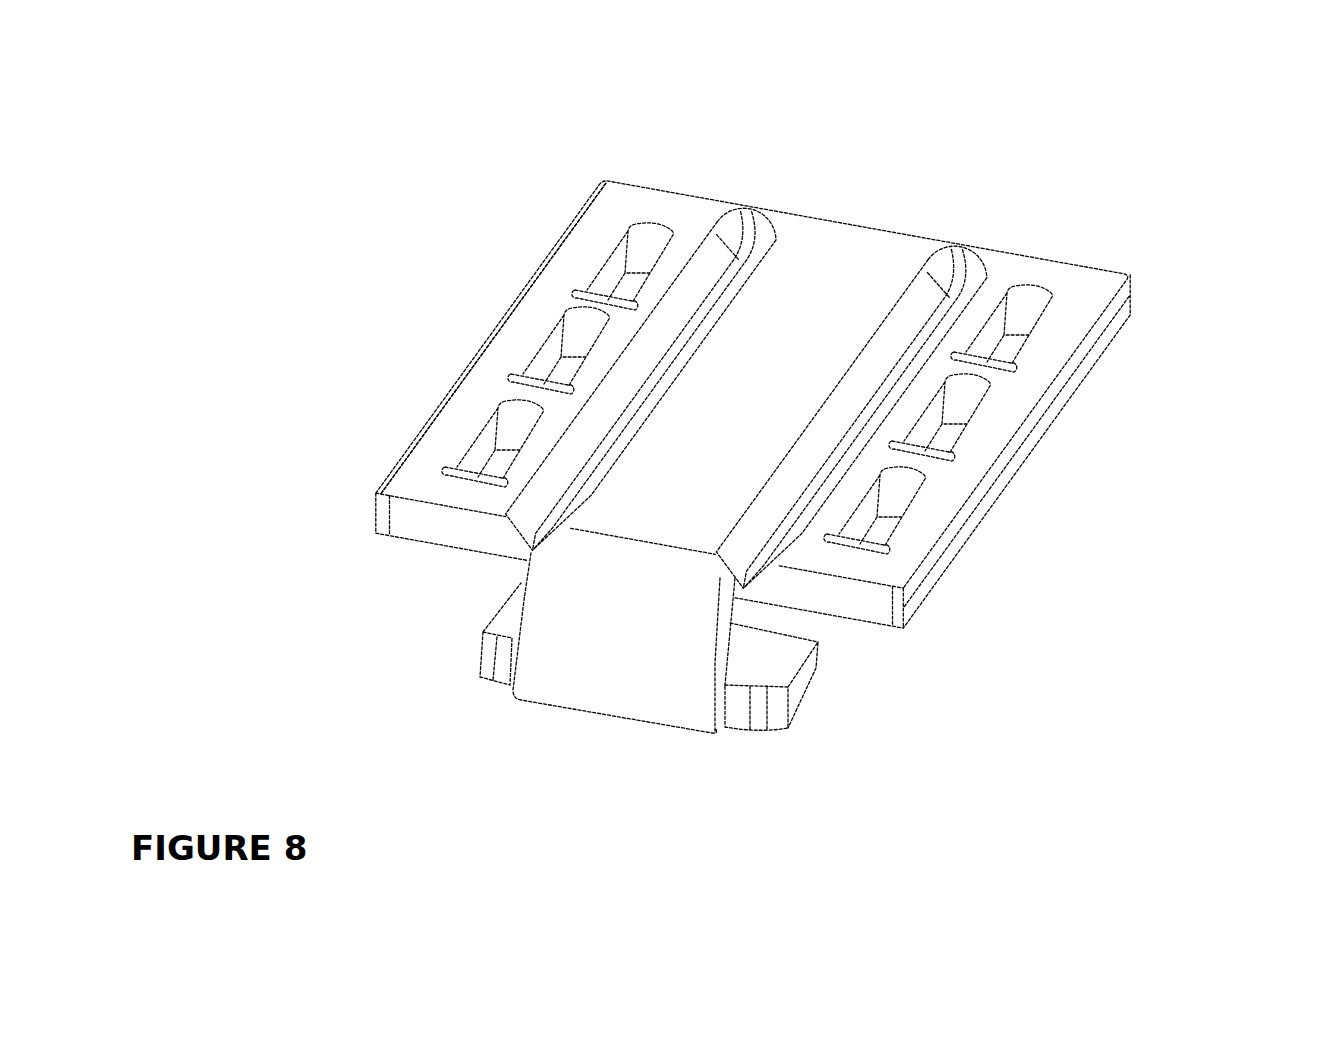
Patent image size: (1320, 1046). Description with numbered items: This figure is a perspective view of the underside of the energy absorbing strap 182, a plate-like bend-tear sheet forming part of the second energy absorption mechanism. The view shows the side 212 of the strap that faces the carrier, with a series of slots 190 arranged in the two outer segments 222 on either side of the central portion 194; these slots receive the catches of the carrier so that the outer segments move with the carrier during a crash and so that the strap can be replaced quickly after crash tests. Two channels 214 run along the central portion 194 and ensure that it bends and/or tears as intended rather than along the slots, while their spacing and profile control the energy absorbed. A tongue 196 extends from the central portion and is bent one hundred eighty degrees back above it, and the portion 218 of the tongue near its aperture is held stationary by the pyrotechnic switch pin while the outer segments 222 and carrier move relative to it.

The energy absorbing strap 182 is at (282, 176).
The slots 190 is at (608, 253).
The central portion 194 is at (730, 188).
The tongue 196 is at (604, 665).
The side 212 is at (456, 418).
The channels 214 is at (516, 530).
The portion of the tongue 218 is at (800, 686).
The outer segments 222 is at (608, 168).